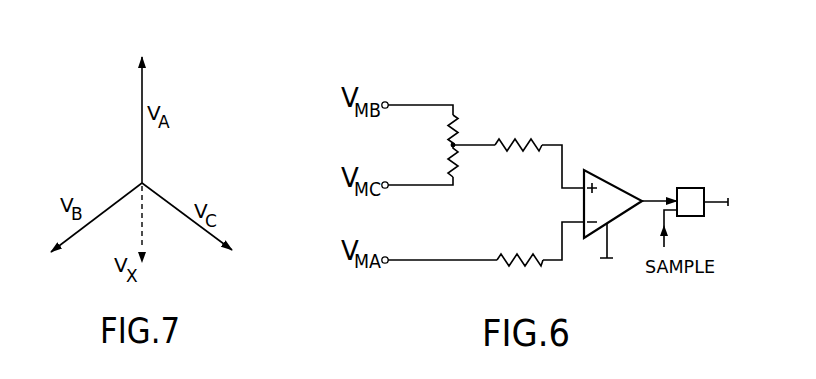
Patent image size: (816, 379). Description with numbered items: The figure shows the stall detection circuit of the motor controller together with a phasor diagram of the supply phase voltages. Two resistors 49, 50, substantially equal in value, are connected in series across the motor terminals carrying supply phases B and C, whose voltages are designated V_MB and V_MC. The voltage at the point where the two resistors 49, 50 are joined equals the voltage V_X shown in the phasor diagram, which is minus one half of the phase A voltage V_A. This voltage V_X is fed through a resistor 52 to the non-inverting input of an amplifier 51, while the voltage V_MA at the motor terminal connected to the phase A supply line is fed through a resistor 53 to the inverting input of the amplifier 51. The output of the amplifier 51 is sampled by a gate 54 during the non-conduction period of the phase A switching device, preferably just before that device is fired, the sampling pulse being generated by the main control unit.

The resistor 49 is at (461, 128).
The resistor 50 is at (457, 165).
The amplifier 51 is at (624, 186).
The resistor 52 is at (529, 139).
The resistor 53 is at (528, 254).
The gate 54 is at (687, 189).